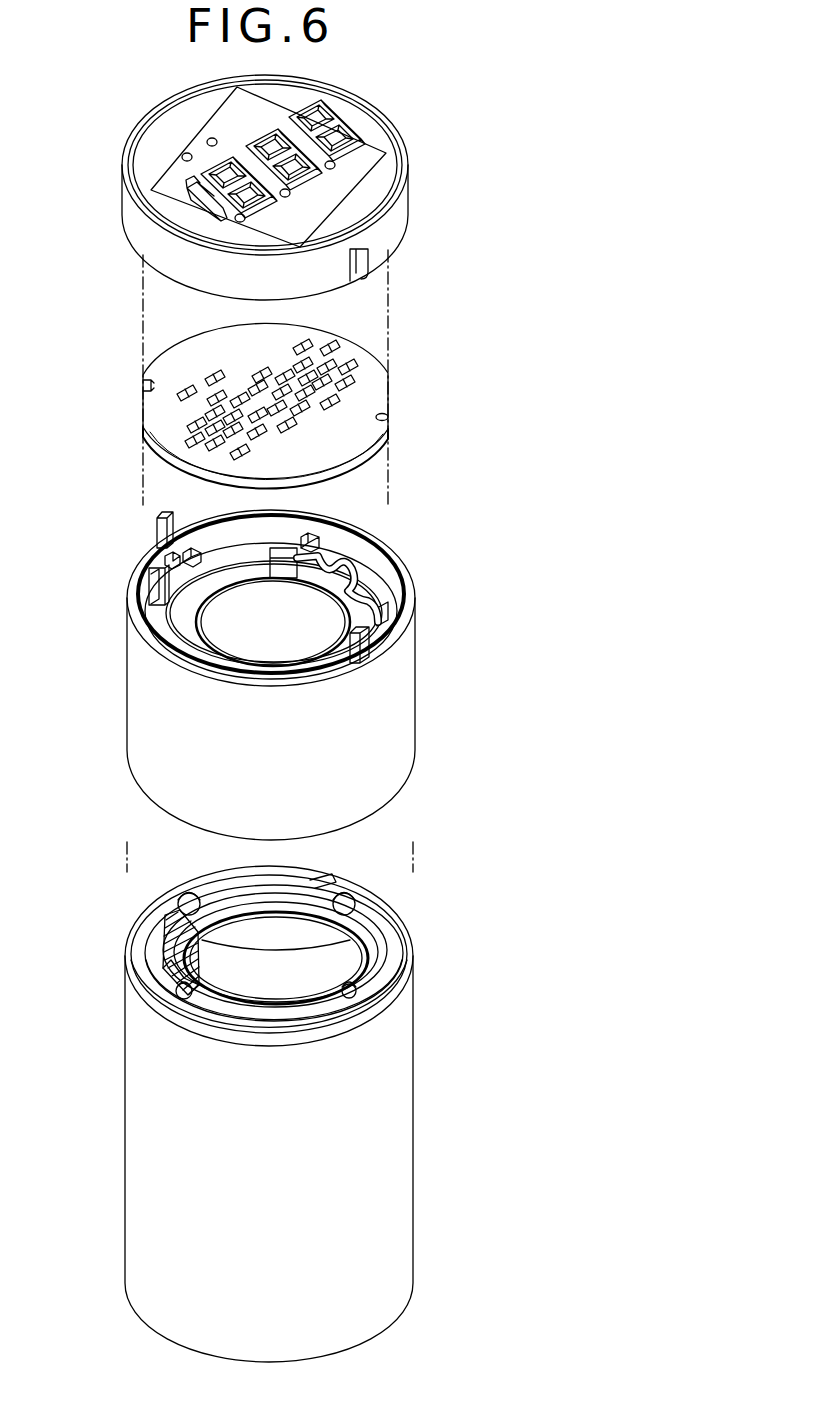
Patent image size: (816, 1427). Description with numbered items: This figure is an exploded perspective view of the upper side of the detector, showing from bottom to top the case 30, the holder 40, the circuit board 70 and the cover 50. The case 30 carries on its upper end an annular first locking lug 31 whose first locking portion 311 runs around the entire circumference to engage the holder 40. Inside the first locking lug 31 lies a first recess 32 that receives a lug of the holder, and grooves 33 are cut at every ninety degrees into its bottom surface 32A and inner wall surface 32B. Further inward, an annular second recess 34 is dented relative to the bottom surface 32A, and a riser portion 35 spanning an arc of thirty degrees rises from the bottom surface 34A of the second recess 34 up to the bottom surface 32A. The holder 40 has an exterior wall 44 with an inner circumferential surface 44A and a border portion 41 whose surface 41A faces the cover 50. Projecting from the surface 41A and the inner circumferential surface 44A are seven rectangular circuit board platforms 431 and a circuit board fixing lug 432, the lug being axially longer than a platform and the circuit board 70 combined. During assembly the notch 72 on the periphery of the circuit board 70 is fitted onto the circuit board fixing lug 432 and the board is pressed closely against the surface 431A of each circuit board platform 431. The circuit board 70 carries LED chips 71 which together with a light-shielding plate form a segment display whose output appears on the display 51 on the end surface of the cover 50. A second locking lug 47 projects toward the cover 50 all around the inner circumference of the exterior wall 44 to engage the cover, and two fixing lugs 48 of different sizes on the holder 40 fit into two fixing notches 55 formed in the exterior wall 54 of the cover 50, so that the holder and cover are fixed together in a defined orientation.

The case 30 is at (274, 1094).
The first locking lug 31 is at (397, 930).
The first locking portion 311 is at (397, 985).
The first recess 32 is at (311, 923).
The bottom surface 32A is at (385, 955).
The inner wall surface 32B is at (322, 879).
The grooves 33 is at (189, 893).
The second recess 34 is at (172, 915).
The bottom surface 34A is at (178, 945).
The riser portion 35 is at (172, 965).
The holder 40 is at (275, 649).
The border portion 41 is at (275, 571).
The surface 41A is at (147, 602).
The circuit board platform 431 is at (345, 556).
The surface 431A is at (192, 549).
The circuit board fixing lug 432 is at (151, 588).
The exterior wall 44 is at (162, 578).
The inner circumferential surface 44A is at (167, 560).
The second locking lug 47 is at (393, 590).
The fixing lugs 48 is at (160, 518).
The cover 50 is at (269, 204).
The display 51 is at (383, 152).
The exterior wall 54 is at (138, 230).
The fixing notches 55 is at (361, 277).
The circuit board 70 is at (269, 405).
The LED chips 71 is at (350, 366).
The notch 72 is at (146, 386).